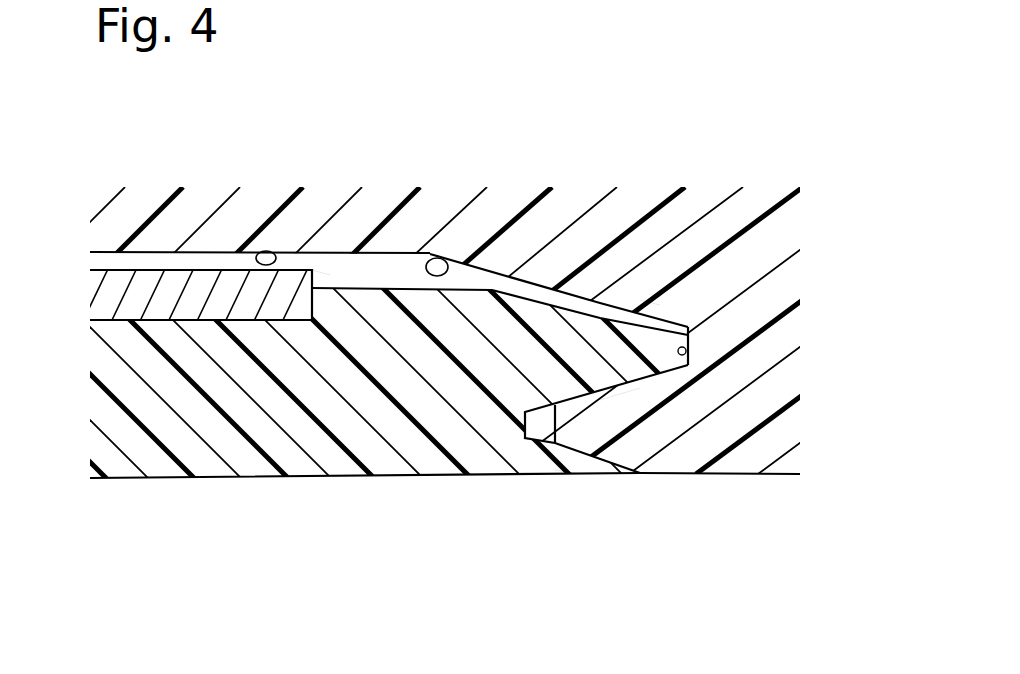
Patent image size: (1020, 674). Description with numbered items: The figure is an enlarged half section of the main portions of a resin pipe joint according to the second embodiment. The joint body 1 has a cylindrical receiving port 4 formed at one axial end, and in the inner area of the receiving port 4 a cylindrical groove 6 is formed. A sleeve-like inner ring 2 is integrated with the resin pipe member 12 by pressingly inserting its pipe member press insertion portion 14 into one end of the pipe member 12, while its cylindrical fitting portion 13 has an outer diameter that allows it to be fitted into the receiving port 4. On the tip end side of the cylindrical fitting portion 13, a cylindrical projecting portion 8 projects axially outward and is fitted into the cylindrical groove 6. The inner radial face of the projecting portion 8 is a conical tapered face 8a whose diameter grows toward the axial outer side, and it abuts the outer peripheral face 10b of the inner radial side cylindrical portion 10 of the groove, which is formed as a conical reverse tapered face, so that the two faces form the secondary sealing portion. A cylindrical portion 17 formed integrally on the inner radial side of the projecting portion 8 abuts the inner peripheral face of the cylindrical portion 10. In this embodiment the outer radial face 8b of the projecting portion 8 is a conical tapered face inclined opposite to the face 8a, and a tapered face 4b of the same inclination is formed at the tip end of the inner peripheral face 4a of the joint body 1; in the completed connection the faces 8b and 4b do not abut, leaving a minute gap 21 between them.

The joint body 1 is at (806, 412).
The inner ring 2 is at (142, 482).
The receiving port 4 is at (140, 193).
The inner peripheral face 4a is at (274, 252).
The tapered face 4b is at (442, 258).
The cylindrical groove 6 is at (690, 356).
The cylindrical projecting portion 8 is at (533, 305).
The conical tapered face 8a is at (615, 385).
The outer radial face 8b is at (582, 312).
The inner radial side cylindrical portion 10 is at (610, 420).
The outer peripheral face 10b is at (602, 392).
The pipe member 12 is at (108, 301).
The cylindrical fitting portion 13 is at (330, 303).
The pipe member press insertion portion 14 is at (110, 402).
The cylindrical portion 17 is at (564, 457).
The minute gap 21 is at (650, 300).